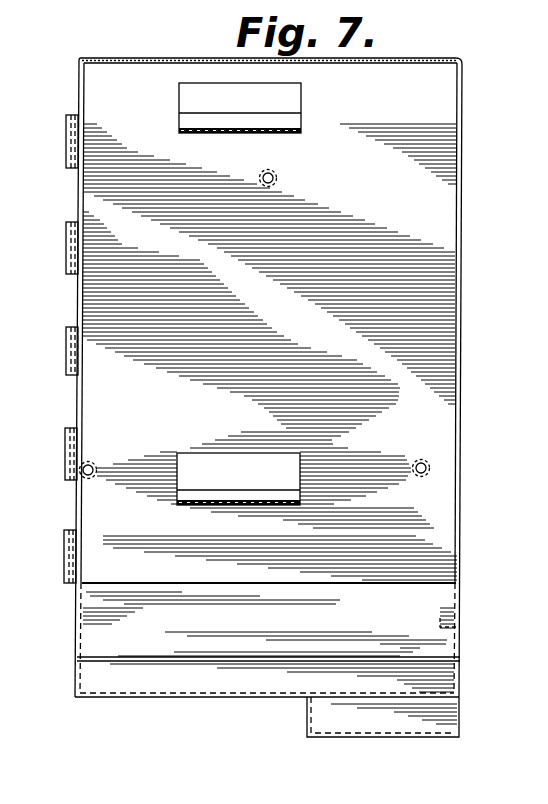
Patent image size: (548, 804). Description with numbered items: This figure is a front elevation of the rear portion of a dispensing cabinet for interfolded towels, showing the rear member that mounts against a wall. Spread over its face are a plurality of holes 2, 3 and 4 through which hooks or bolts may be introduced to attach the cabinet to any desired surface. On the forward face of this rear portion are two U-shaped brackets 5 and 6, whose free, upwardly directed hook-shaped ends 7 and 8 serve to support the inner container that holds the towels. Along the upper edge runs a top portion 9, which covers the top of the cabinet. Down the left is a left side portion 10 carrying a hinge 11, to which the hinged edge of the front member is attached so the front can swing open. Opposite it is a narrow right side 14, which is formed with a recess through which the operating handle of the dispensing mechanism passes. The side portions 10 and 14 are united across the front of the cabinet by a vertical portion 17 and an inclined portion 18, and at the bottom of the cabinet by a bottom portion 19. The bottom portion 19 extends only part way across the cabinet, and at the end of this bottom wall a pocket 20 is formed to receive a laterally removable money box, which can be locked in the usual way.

The hole 2 is at (277, 176).
The hole 3 is at (422, 460).
The hole 4 is at (95, 462).
The U-shaped bracket 5 is at (288, 103).
The U-shaped bracket 6 is at (286, 471).
The hook-shaped end 7 is at (292, 126).
The hook-shaped end 8 is at (300, 497).
The top portion 9 is at (387, 62).
The left side portion 10 is at (79, 301).
The hinge 11 is at (67, 136).
The narrow right side 14 is at (461, 328).
The vertical portion 17 is at (218, 600).
The inclined portion 18 is at (276, 685).
The bottom portion 19 is at (188, 699).
The pocket 20 is at (390, 725).